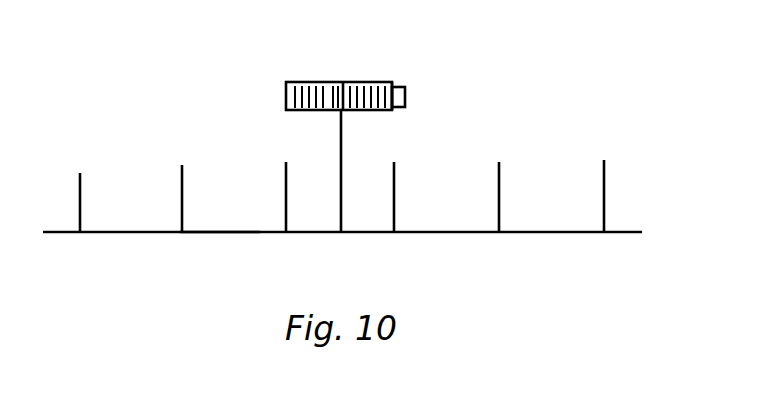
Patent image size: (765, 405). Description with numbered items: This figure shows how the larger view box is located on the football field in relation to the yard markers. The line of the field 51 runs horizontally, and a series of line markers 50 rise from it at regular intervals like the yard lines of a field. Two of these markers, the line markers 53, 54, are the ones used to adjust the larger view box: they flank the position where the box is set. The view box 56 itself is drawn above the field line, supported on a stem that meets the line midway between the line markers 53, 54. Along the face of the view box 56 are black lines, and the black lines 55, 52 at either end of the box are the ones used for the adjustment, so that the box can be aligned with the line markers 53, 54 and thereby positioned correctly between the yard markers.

The line markers 50 is at (80, 207).
The line of the field 51 is at (220, 233).
The black line used for the adjustment 52 is at (405, 97).
The line marker used to adjust the larger view box 53 is at (286, 222).
The line marker used to adjust the larger view box 54 is at (394, 222).
The black line used for the adjustment 55 is at (288, 82).
The view box 56 is at (394, 82).